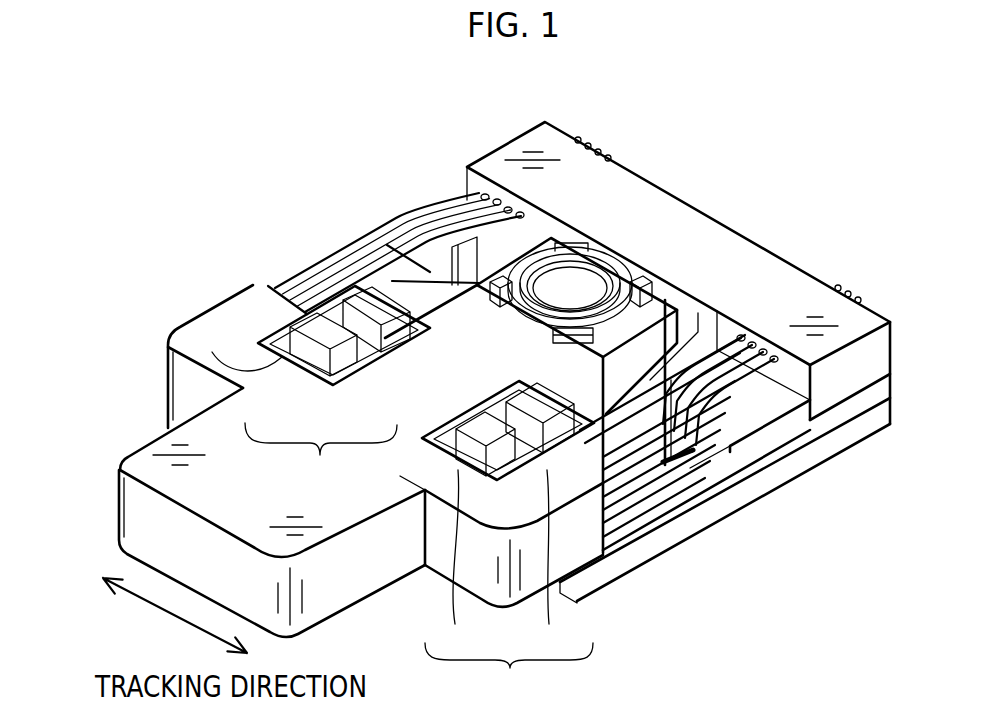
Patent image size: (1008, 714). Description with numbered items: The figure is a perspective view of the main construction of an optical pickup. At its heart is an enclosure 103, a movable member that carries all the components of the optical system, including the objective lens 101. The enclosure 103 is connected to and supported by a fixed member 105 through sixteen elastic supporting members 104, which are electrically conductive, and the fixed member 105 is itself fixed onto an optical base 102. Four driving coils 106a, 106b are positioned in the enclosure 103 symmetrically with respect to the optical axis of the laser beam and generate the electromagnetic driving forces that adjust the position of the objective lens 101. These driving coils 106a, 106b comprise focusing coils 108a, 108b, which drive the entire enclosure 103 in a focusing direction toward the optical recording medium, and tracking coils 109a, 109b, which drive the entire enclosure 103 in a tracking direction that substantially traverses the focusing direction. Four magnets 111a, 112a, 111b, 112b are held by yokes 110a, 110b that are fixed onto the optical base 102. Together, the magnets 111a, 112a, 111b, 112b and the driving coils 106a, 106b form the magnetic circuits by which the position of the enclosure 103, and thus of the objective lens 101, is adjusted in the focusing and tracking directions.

The objective lens 101 is at (582, 292).
The optical base 102 is at (750, 508).
The enclosure 103 is at (365, 605).
The elastic supporting members 104 is at (340, 235).
The fixed member 105 is at (742, 233).
The driving coil 106a is at (509, 671).
The driving coil 106b is at (321, 452).
The focusing coil 108a is at (464, 563).
The focusing coil 108b is at (290, 372).
The tracking coil 109a is at (542, 563).
The tracking coil 109b is at (380, 382).
The yoke 110a is at (444, 445).
The yoke 110b is at (228, 376).
The magnet 111a is at (494, 409).
The magnet 111b is at (300, 332).
The magnet 112a is at (525, 359).
The magnet 112b is at (393, 338).